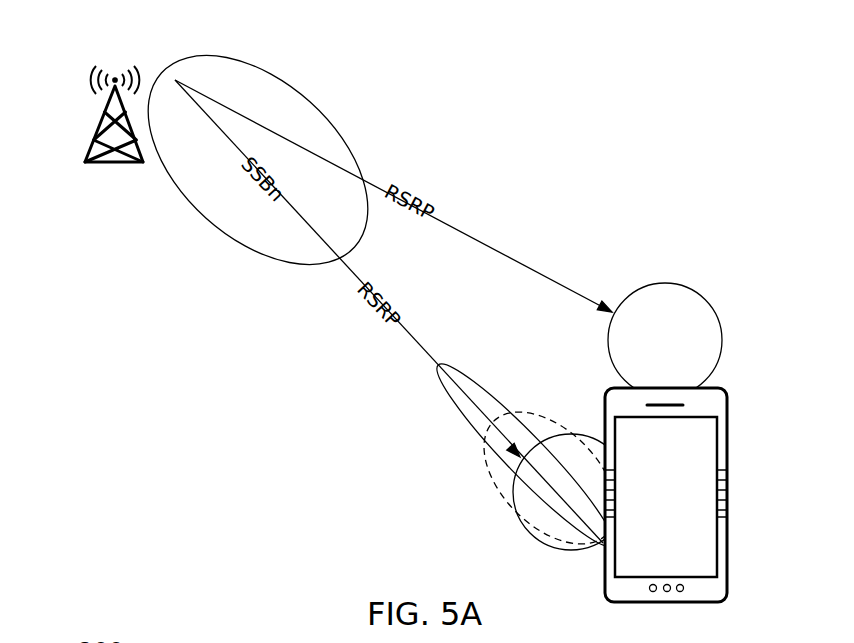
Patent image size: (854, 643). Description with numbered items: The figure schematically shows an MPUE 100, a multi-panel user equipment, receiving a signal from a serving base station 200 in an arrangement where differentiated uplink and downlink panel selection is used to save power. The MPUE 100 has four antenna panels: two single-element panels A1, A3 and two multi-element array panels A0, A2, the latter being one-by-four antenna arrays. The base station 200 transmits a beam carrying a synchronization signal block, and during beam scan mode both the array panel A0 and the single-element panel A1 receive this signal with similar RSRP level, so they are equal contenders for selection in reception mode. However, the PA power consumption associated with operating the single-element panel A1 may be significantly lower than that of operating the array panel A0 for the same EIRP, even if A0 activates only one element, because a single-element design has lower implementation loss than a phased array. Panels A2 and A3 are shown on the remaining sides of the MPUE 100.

The serving base station 200 is at (113, 62).
The MPUE 100 is at (690, 520).
The multi-element array panel A0 is at (532, 459).
The single element panel A1 is at (668, 390).
The multi-element array panel A2 is at (727, 478).
The single element panel A3 is at (673, 580).